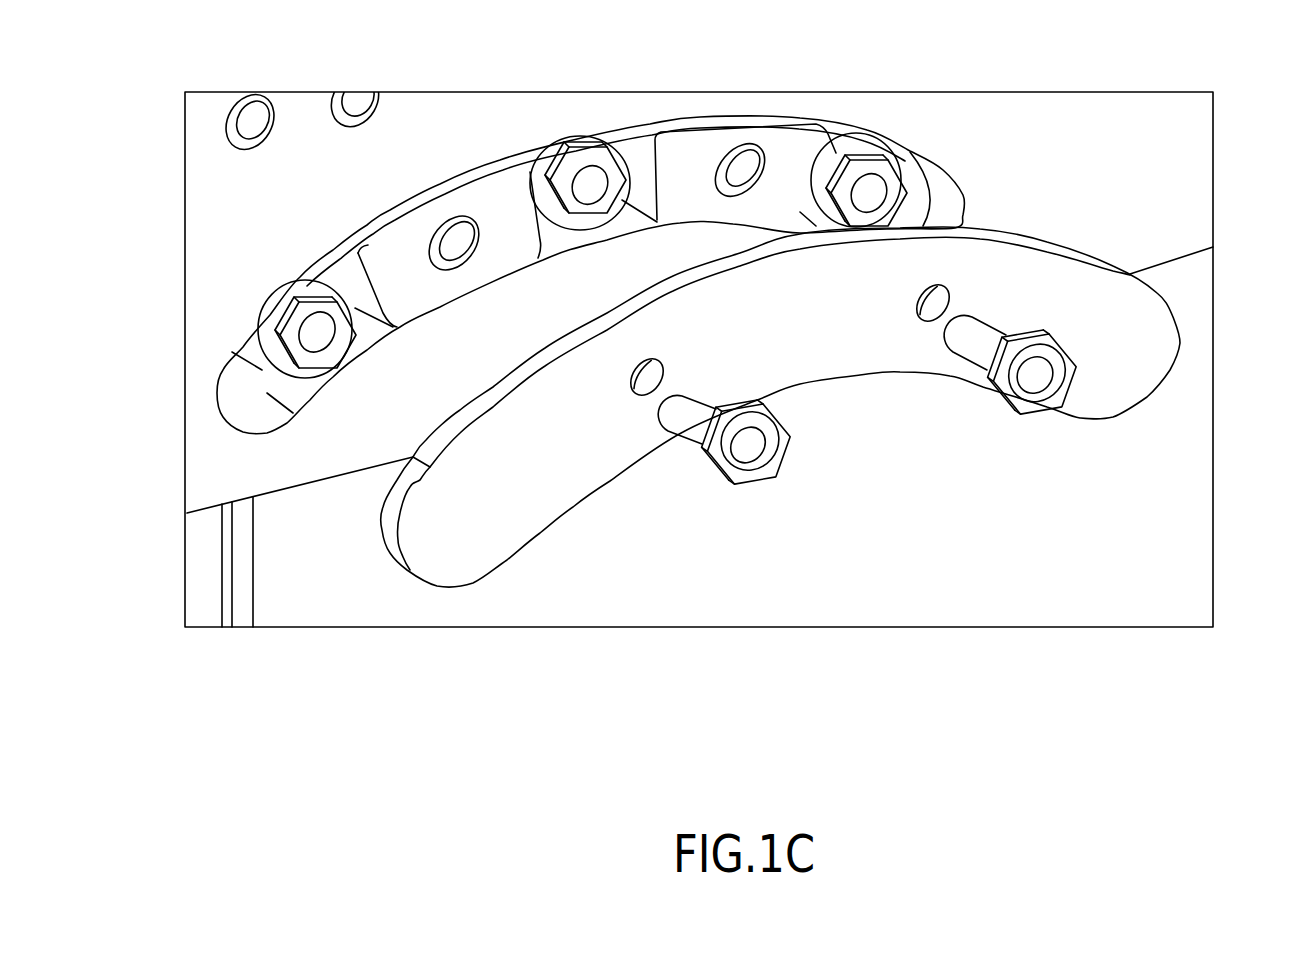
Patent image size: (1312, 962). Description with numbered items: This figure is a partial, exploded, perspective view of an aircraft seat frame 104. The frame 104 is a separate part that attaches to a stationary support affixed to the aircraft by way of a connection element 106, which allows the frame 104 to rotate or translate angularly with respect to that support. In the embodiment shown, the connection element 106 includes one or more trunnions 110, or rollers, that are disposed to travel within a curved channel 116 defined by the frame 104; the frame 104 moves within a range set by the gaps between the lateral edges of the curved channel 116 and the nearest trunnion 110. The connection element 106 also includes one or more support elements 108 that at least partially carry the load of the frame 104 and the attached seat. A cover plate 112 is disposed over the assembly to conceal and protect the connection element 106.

The frame 104 is at (1137, 113).
The connection element 106 is at (322, 236).
The support element 108 is at (497, 197).
The trunnion 110 is at (866, 142).
The cover plate 112 is at (1146, 377).
The curved channel 116 is at (256, 378).